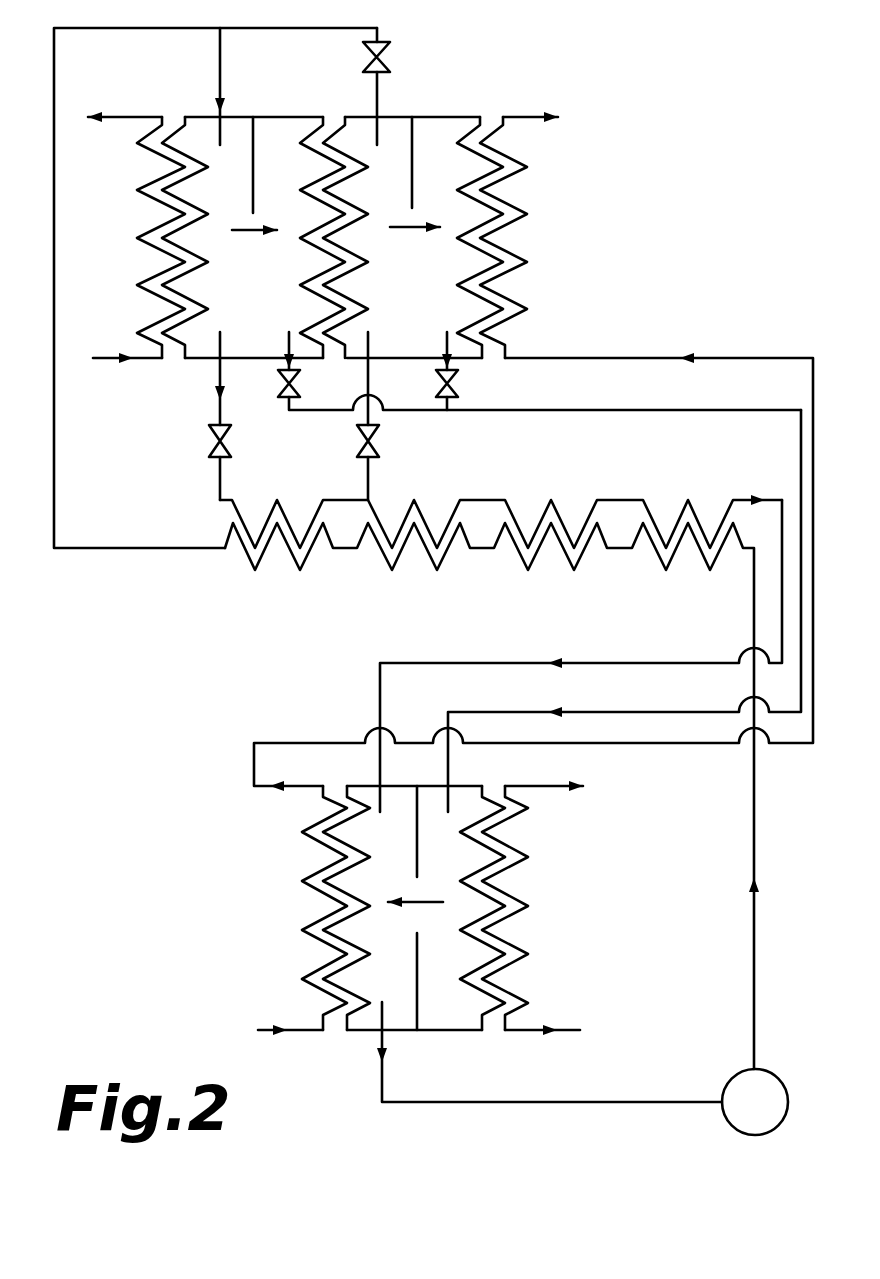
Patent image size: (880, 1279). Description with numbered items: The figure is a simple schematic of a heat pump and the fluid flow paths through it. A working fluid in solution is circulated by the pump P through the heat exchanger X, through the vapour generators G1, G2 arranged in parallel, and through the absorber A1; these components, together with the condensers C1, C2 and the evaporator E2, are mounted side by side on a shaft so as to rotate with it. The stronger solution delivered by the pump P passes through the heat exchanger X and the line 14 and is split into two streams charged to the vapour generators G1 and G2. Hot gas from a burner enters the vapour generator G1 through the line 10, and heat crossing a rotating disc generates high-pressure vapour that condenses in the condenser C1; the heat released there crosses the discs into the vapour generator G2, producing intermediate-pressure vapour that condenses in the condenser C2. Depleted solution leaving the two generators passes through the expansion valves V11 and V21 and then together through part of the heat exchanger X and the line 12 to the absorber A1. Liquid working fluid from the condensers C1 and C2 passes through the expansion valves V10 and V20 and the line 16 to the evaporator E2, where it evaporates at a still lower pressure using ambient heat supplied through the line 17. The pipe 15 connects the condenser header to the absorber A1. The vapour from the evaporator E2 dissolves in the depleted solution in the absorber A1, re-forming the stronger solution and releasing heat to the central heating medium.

The hot gas line 10 is at (158, 362).
The depleted solution line 12 is at (418, 663).
The stronger solution line 14 is at (55, 402).
The pipe from condenser header to absorber A1 15 is at (254, 762).
The liquid working fluid line 16 is at (638, 712).
The ambient heat line 17 is at (527, 1032).
The vapour generator G1 is at (179, 237).
The vapour generator G2 is at (340, 237).
The condenser C1 is at (287, 188).
The condenser C2 is at (487, 237).
The absorber A1 is at (340, 908).
The evaporator E2 is at (488, 908).
The heat exchanger X is at (501, 782).
The pump P is at (582, 1068).
The expansion valve V10 is at (539, 371).
The expansion valve V11 is at (240, 416).
The expansion valve V20 is at (467, 371).
The expansion valve V21 is at (388, 416).